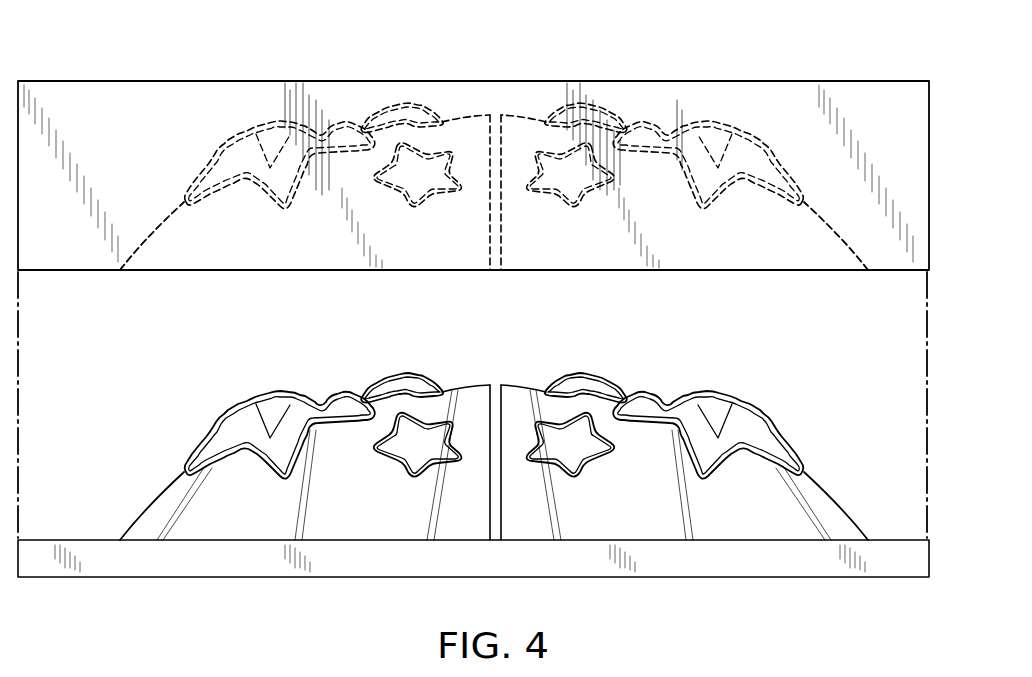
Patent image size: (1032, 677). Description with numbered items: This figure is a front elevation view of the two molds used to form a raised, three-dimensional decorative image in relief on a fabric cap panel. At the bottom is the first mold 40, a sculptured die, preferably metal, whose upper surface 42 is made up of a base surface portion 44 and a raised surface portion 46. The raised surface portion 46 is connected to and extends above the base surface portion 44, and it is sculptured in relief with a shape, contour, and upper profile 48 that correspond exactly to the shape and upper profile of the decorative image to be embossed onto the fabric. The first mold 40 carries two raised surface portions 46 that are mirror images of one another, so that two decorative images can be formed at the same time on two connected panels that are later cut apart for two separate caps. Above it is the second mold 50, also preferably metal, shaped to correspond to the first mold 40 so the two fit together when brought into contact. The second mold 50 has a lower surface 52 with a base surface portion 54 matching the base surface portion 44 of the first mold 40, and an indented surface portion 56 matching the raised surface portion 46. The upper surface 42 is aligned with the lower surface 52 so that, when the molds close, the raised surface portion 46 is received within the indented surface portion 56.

The first mold 40 is at (274, 518).
The upper surface 42 is at (144, 500).
The base surface portion 44 is at (632, 509).
The raised surface portion 46 is at (399, 381).
The upper profile 48 is at (213, 433).
The second mold 50 is at (152, 108).
The lower surface 52 is at (172, 230).
The base surface portion 54 is at (807, 243).
The indented surface portion 56 is at (346, 118).